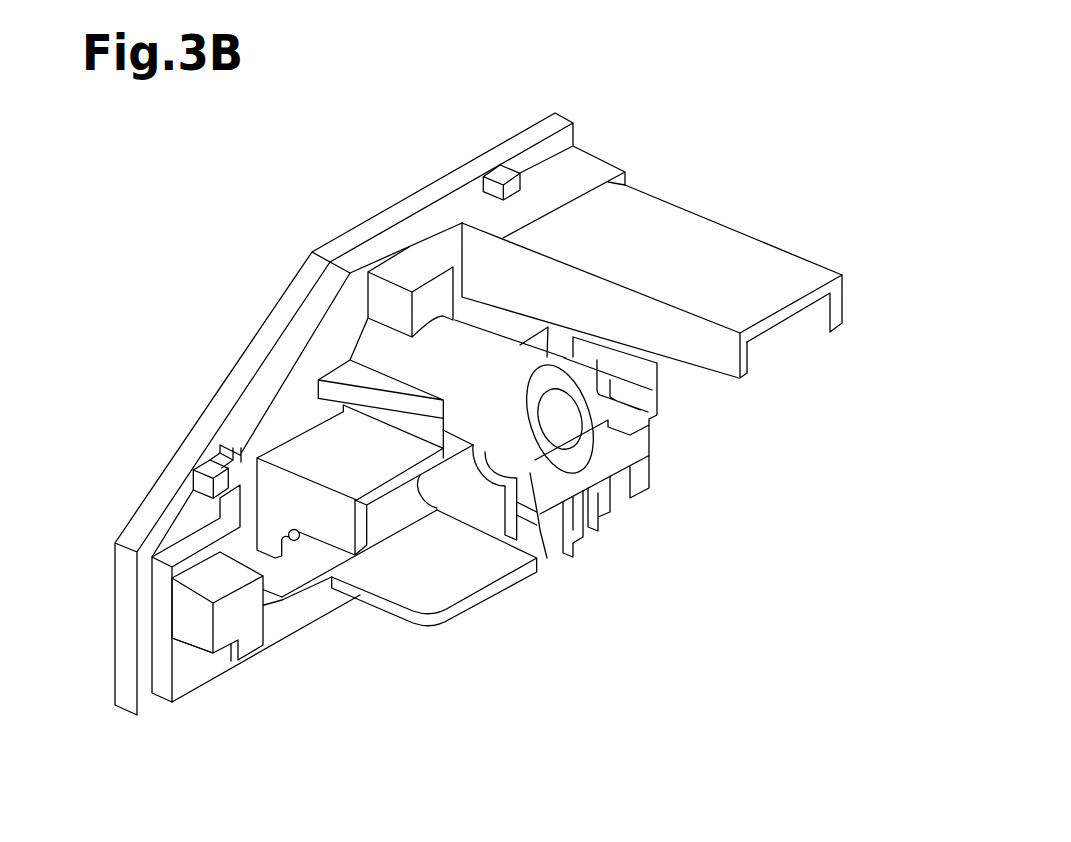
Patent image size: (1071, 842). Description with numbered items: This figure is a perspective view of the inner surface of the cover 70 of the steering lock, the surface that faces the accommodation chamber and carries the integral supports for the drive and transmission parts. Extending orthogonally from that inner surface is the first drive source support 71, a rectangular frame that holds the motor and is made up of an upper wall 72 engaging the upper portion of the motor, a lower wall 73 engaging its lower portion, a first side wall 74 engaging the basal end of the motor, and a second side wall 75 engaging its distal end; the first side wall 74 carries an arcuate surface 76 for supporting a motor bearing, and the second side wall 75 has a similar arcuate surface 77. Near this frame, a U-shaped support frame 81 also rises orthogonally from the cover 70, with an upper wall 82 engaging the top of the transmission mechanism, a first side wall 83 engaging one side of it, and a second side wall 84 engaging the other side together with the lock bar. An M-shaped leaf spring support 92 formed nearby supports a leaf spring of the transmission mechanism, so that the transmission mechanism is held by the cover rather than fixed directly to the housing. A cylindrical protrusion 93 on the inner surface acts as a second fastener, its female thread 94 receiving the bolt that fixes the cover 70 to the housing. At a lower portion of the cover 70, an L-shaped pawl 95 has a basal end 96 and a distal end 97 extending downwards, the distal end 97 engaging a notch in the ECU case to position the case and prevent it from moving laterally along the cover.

The cover 70 is at (352, 216).
The first drive source support 71 is at (372, 606).
The upper wall 72 is at (298, 442).
The lower wall 73 is at (490, 603).
The first side wall 74 is at (257, 476).
The second side wall 75 is at (468, 500).
The arcuate surface 76 is at (286, 531).
The arcuate surface 77 is at (538, 545).
The support frame 81 is at (590, 152).
The upper wall 82 is at (690, 224).
The first side wall 83 is at (748, 358).
The second side wall 84 is at (845, 296).
The leaf spring support 92 is at (612, 530).
The protrusion 93 is at (650, 440).
The female thread 94 is at (548, 416).
The pawl 95 is at (183, 643).
The basal end 96 is at (173, 615).
The distal end 97 is at (250, 642).